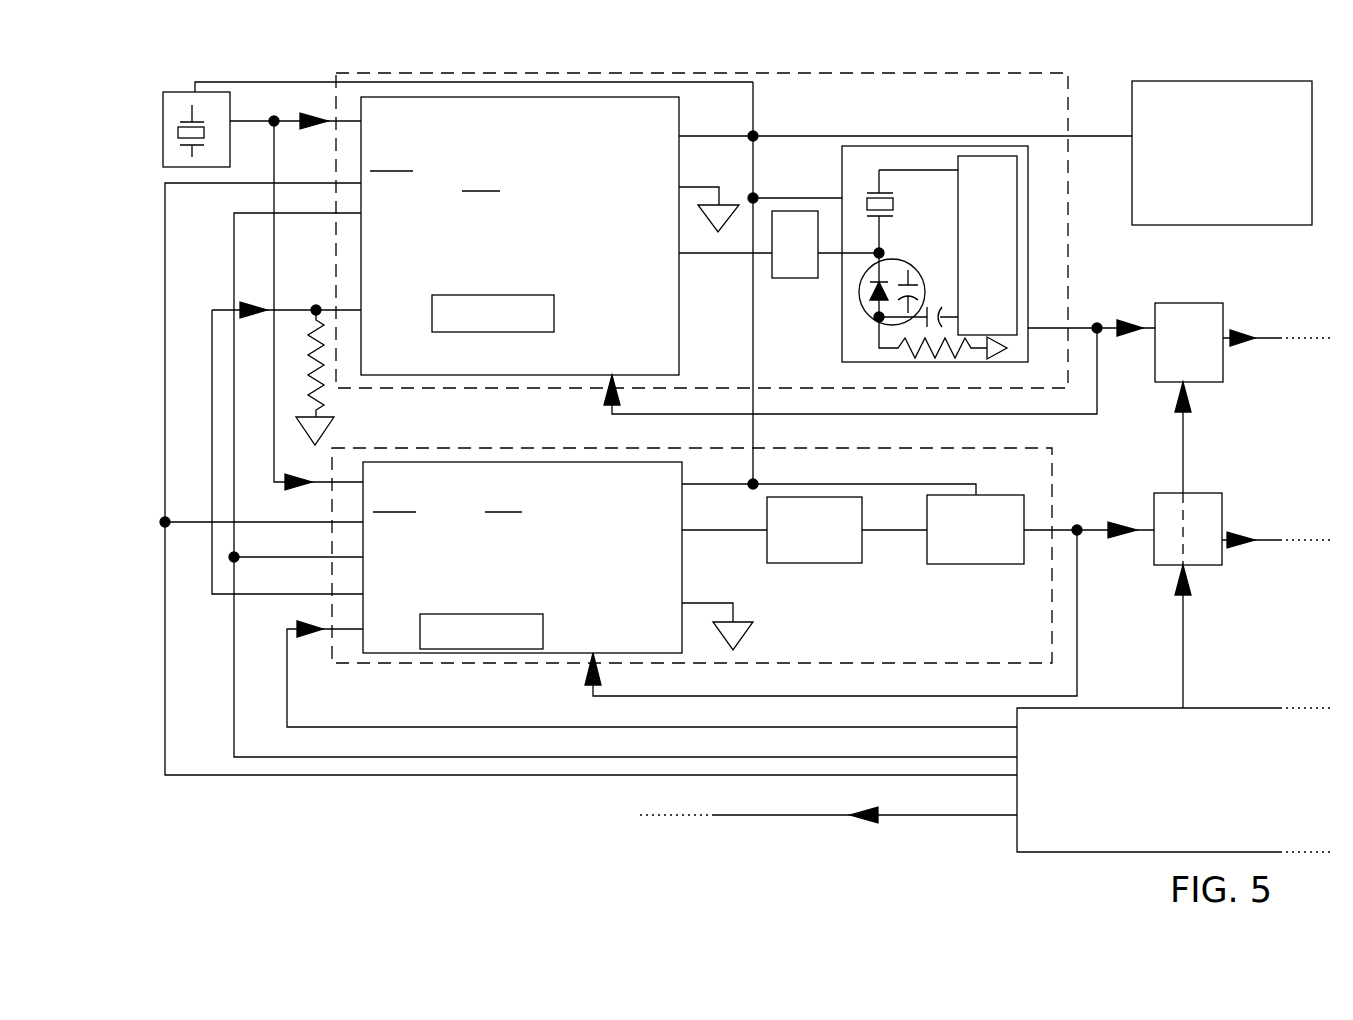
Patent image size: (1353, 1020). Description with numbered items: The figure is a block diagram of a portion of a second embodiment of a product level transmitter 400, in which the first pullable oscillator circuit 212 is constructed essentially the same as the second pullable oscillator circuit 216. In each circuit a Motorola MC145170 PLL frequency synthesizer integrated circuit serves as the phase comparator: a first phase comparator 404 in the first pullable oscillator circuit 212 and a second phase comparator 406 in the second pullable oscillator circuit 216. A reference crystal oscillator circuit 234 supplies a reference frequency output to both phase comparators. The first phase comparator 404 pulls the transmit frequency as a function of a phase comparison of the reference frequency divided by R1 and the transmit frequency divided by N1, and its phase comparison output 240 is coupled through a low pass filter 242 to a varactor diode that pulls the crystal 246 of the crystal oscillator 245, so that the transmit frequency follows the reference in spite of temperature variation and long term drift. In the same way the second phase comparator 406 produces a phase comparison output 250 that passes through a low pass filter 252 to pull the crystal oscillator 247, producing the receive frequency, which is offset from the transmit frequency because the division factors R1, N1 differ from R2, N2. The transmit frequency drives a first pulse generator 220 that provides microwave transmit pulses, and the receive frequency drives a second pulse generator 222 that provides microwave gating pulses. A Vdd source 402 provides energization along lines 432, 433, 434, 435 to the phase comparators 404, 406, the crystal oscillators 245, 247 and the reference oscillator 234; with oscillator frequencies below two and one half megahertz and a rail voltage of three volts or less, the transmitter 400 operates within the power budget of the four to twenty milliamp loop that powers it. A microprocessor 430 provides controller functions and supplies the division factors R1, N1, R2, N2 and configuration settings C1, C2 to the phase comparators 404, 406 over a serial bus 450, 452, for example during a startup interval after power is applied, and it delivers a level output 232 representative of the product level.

The product level transmitter 400 is at (372, 810).
The Vdd source 402 is at (1203, 209).
The phase comparator 404 is at (729, 255).
The phase comparator 406 is at (720, 579).
The first pullable oscillator circuit 212 is at (500, 388).
The second pullable oscillator circuit 216 is at (478, 663).
The first pulse generator 220 is at (1183, 303).
The second pulse generator 222 is at (1200, 493).
The level output 232 is at (712, 815).
The reference crystal oscillator circuit 234 is at (200, 167).
The phase comparison output 240 is at (703, 254).
The low pass filter 242 is at (798, 279).
The crystal oscillator 245 is at (1028, 262).
The crystal 246 is at (893, 205).
The crystal oscillator 247 is at (938, 564).
The phase comparison output 250 is at (715, 530).
The low pass filter 252 is at (792, 563).
The microprocessor 430 is at (1118, 759).
The energization line 432 is at (876, 136).
The energization line 433 is at (255, 82).
The energization line 434 is at (757, 167).
The energization line 435 is at (787, 484).
The serial bus 450 is at (430, 727).
The serial bus 452 is at (212, 594).